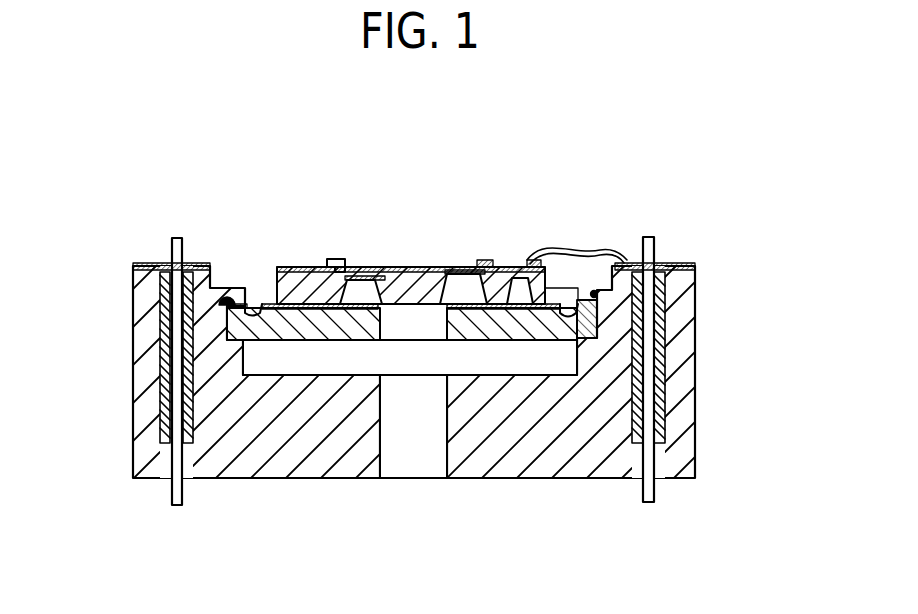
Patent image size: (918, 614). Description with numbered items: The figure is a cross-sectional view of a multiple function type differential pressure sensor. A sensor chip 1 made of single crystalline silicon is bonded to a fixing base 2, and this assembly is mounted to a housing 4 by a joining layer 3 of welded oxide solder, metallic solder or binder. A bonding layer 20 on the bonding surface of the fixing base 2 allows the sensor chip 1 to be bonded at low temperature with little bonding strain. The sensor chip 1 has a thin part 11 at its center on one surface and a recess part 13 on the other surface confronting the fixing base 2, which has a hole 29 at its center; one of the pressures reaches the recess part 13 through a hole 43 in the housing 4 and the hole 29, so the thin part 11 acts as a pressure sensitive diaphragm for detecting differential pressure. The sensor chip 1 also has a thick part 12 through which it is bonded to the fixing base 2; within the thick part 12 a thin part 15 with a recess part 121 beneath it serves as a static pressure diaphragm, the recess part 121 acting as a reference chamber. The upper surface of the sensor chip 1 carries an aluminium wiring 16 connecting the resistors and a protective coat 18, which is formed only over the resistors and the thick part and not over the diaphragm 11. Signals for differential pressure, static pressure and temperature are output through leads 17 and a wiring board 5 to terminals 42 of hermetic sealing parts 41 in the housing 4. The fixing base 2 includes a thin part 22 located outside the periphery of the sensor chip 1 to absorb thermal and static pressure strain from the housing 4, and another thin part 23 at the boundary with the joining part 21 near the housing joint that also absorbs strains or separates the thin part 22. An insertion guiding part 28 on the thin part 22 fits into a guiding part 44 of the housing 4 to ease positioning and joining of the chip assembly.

The multiple function type differential pressure sensor chip 1 is at (262, 302).
The fixing base 2 is at (503, 320).
The joining layer 3 is at (160, 282).
The housing 4 is at (555, 462).
The wiring board 5 is at (690, 267).
The thin part 11 is at (447, 285).
The thick part 12 is at (301, 267).
The recess part 13 is at (467, 290).
The thin part 15 is at (513, 293).
The aluminium wiring 16 is at (556, 300).
The leads 17 is at (592, 265).
The protective coat 18 is at (324, 264).
The bonding layer 20 is at (240, 324).
The joining part 21 is at (313, 330).
The thin part 22 is at (230, 306).
The thin part 23 is at (236, 288).
The insertion guiding part 28 is at (240, 337).
The hole 29 is at (402, 335).
The hermetic sealing parts 41 is at (655, 328).
The terminals 42 is at (655, 385).
The hole 43 is at (415, 455).
The guiding part 44 is at (585, 345).
The recess part 121 is at (596, 291).